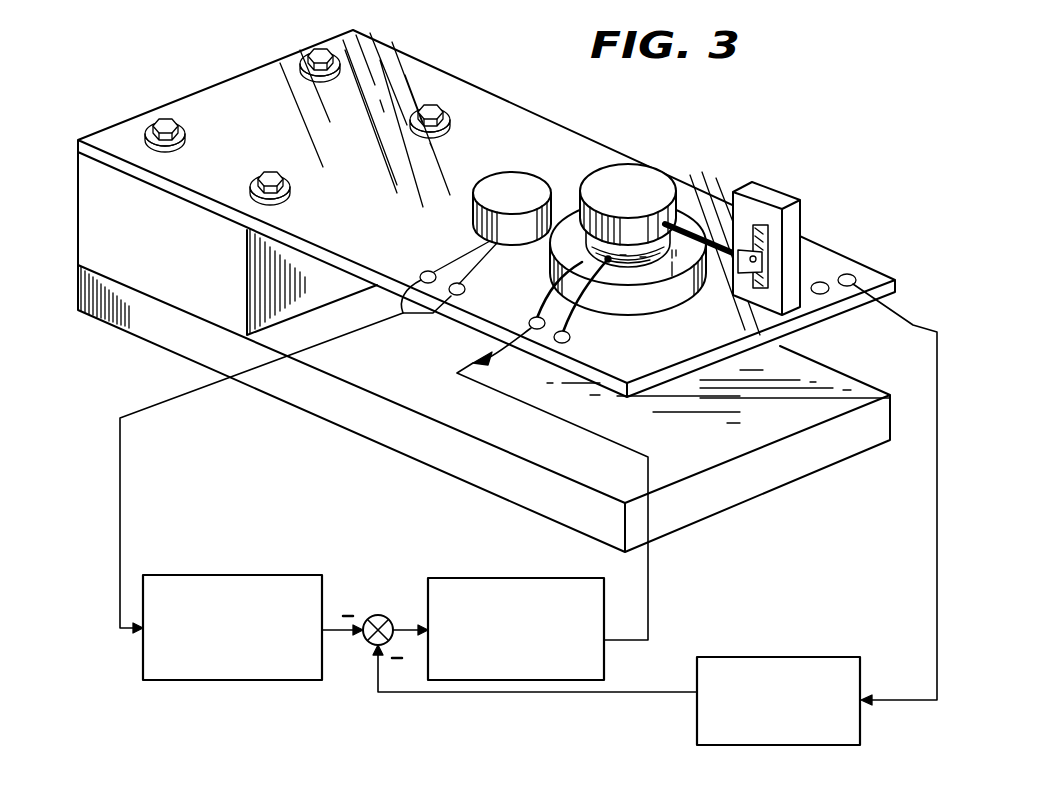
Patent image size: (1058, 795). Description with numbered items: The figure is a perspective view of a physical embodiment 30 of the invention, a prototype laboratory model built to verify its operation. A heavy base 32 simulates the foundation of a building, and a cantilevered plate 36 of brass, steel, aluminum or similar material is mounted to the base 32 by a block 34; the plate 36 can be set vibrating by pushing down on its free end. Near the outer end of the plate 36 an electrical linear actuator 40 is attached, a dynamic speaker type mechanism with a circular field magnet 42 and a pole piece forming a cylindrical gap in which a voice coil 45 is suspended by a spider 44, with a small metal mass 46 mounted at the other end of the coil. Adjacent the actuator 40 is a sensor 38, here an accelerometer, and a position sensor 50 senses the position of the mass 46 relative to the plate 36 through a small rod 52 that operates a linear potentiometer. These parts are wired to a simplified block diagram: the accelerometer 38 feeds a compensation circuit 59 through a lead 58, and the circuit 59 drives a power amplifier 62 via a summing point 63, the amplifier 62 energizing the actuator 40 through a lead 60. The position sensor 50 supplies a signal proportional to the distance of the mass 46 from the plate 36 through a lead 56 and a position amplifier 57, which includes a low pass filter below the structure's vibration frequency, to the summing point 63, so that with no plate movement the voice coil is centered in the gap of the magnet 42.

The physical embodiment 30 is at (762, 144).
The heavy base 32 is at (452, 460).
The block 34 is at (182, 265).
The cantilevered plate 36 is at (231, 100).
The sensor 38 is at (518, 185).
The electrical linear actuator 40 is at (635, 324).
The circular field magnet 42 is at (557, 258).
The spider 44 is at (630, 268).
The voice coil 45 is at (648, 272).
The small metal mass 46 is at (645, 182).
The position sensor 50 is at (795, 188).
The small rod 52 is at (728, 235).
The lead 56 is at (917, 327).
The position amplifier 57 is at (822, 656).
The lead 58 is at (347, 338).
The compensation circuit 59 is at (272, 578).
The lead 60 is at (592, 433).
The power amplifier 62 is at (565, 580).
The summing point 63 is at (380, 614).